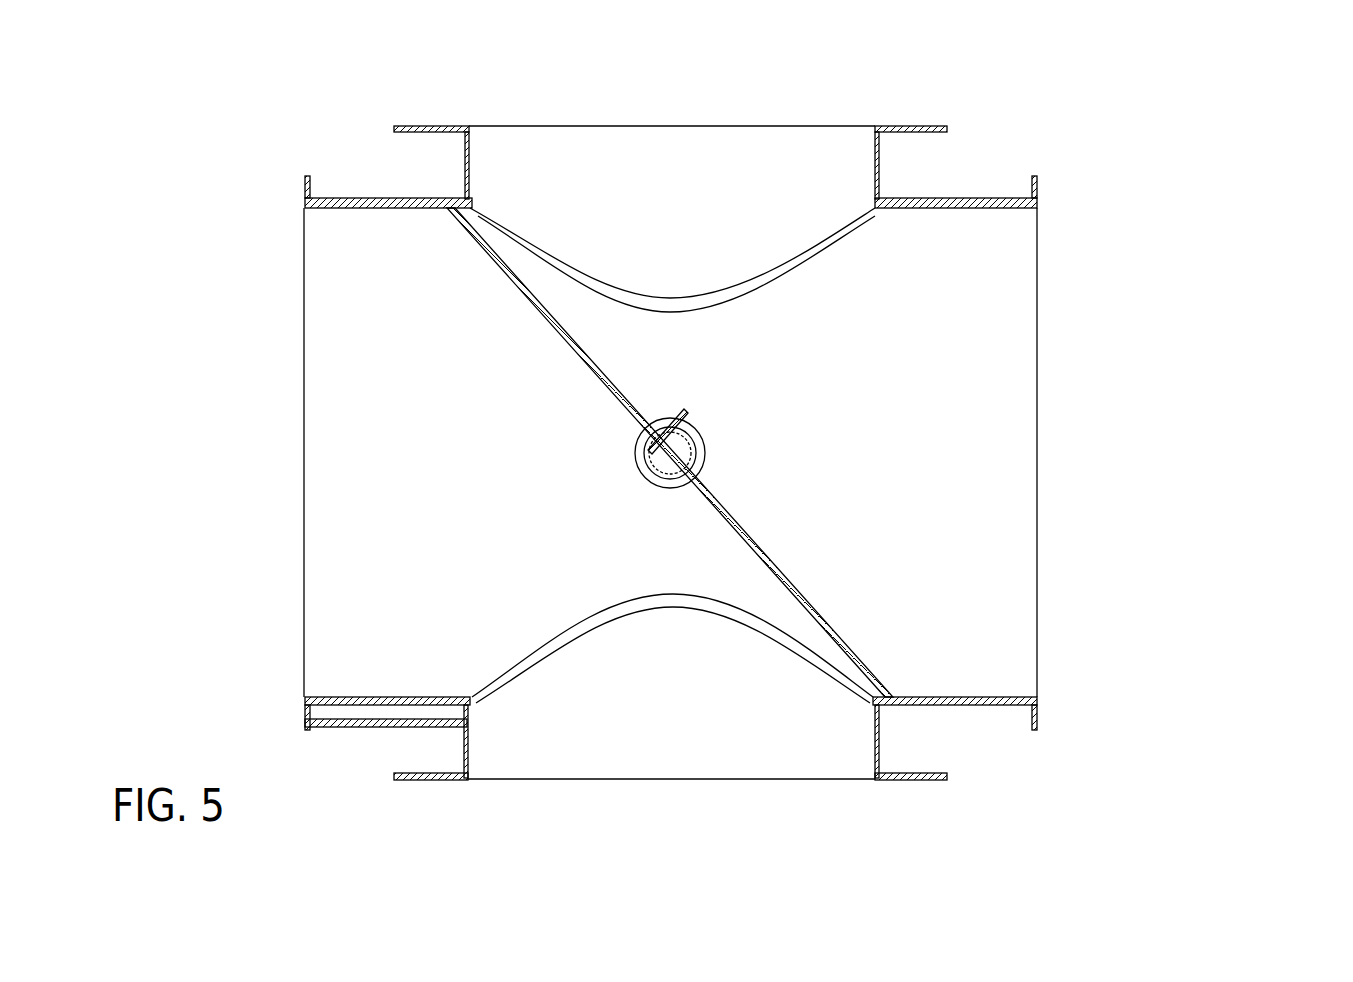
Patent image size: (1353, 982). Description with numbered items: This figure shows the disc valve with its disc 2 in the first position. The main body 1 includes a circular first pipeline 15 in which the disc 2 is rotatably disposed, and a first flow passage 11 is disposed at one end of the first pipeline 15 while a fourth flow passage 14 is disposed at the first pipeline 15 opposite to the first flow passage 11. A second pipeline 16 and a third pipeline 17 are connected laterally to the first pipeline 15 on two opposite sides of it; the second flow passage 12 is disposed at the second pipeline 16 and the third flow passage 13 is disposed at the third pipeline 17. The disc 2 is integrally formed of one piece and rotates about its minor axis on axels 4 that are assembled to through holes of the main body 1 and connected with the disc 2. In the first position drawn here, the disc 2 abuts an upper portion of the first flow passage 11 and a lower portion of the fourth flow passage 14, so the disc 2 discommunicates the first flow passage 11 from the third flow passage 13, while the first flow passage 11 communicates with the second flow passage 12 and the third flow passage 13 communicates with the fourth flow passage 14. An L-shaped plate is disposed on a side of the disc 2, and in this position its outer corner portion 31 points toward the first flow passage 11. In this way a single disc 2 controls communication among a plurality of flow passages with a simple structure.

The main body 1 is at (1128, 234).
The first flow passage 11 is at (336, 419).
The second flow passage 12 is at (657, 750).
The third flow passage 13 is at (658, 150).
The fourth flow passage 14 is at (990, 413).
The first pipeline 15 is at (835, 502).
The second pipeline 16 is at (878, 742).
The third pipeline 17 is at (878, 162).
The disc 2 is at (788, 585).
The outer corner portion 31 is at (637, 438).
The axel 4 is at (658, 470).